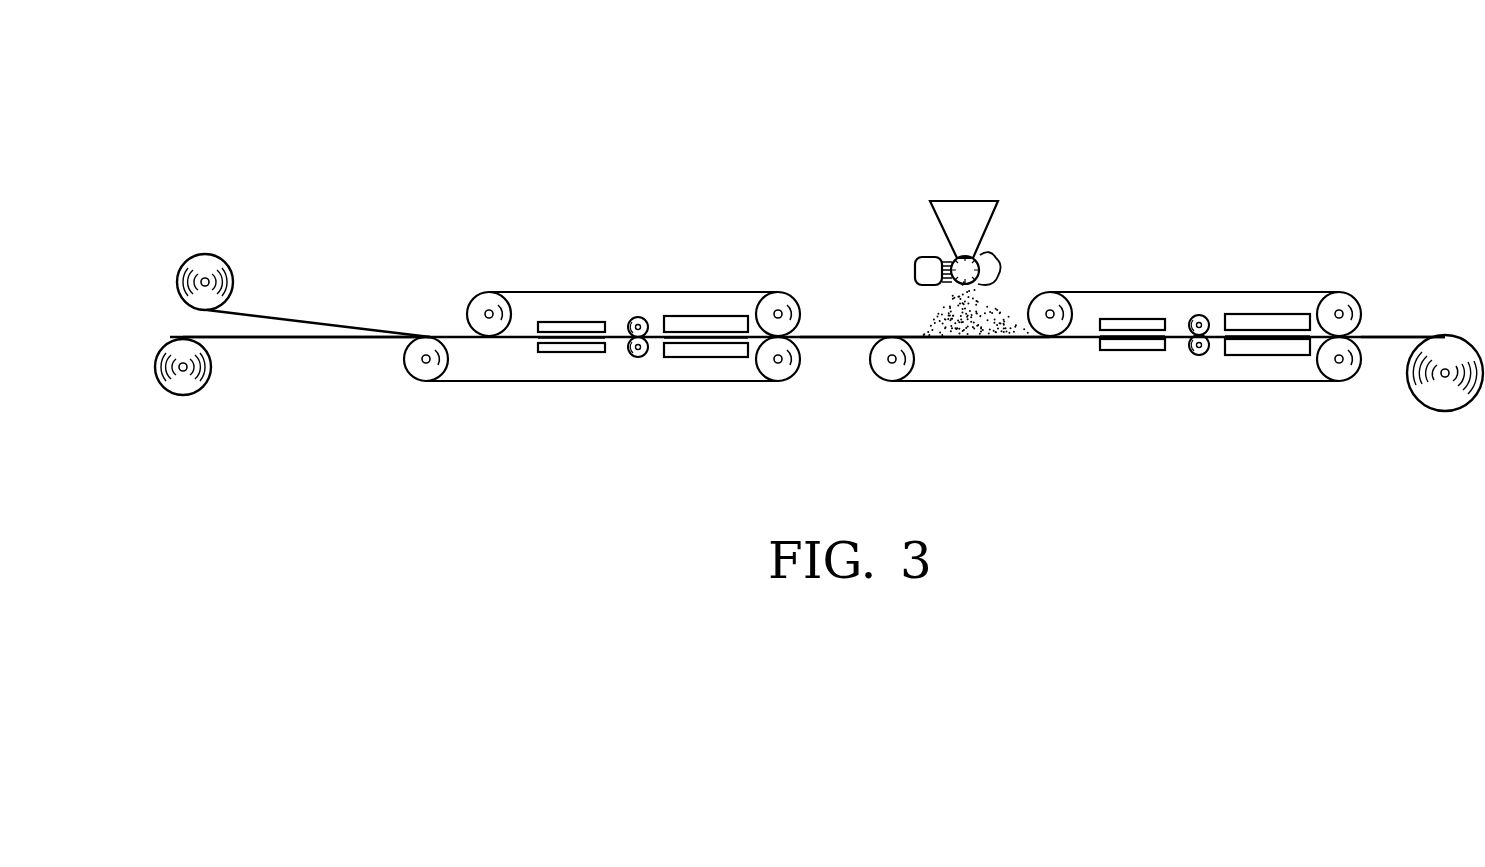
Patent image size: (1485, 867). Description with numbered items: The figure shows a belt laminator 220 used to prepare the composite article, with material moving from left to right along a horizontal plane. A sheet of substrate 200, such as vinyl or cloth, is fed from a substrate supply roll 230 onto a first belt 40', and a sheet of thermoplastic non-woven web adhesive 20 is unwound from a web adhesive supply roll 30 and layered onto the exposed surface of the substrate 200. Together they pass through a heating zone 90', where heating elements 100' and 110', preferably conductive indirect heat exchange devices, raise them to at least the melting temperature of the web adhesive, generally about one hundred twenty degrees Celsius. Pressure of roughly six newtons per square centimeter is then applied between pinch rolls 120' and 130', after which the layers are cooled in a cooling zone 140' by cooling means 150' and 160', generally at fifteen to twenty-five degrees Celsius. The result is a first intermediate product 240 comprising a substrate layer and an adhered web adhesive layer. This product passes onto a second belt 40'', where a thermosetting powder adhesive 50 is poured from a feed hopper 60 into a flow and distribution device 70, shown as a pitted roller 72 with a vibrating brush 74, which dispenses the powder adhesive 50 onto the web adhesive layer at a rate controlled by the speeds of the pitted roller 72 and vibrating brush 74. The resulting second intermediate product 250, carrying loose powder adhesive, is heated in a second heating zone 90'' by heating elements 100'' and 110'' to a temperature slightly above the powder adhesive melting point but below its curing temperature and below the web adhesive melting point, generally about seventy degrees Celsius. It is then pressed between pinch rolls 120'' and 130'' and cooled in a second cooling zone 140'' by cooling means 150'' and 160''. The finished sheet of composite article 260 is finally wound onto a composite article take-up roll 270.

The belt laminator 220 is at (822, 112).
The thermoplastic non-woven web adhesive 20 is at (301, 322).
The web adhesive supply roll 30 is at (233, 284).
The substrate 200 is at (290, 338).
The substrate supply roll 230 is at (200, 395).
The belt 40' is at (602, 370).
The heating zone 90' is at (547, 393).
The heating element 100' is at (570, 285).
The heating element 110' is at (571, 396).
The pinch roll 120' is at (622, 287).
The pinch roll 130' is at (624, 393).
The cooling zone 140' is at (705, 392).
The cooling means 150' is at (715, 286).
The cooling means 160' is at (723, 394).
The first intermediate product 240 is at (835, 337).
The feed hopper 60 is at (957, 205).
The vibrating brush 74 is at (925, 258).
The pitted roller 72 is at (972, 284).
The flow and distribution device 70 is at (998, 262).
The thermosetting powder adhesive 50 is at (927, 335).
The belt 40'' is at (1115, 382).
The second intermediate product 250 is at (1002, 338).
The second heating zone 90'' is at (1094, 384).
The heating element 100'' is at (1128, 283).
The heating element 110'' is at (1126, 389).
The pinch roll 120'' is at (1184, 285).
The pinch roll 130'' is at (1175, 386).
The second cooling zone 140'' is at (1253, 396).
The cooling means 150'' is at (1273, 283).
The cooling means 160'' is at (1287, 389).
The composite article 260 is at (1378, 334).
The composite article take-up roll 270 is at (1446, 413).